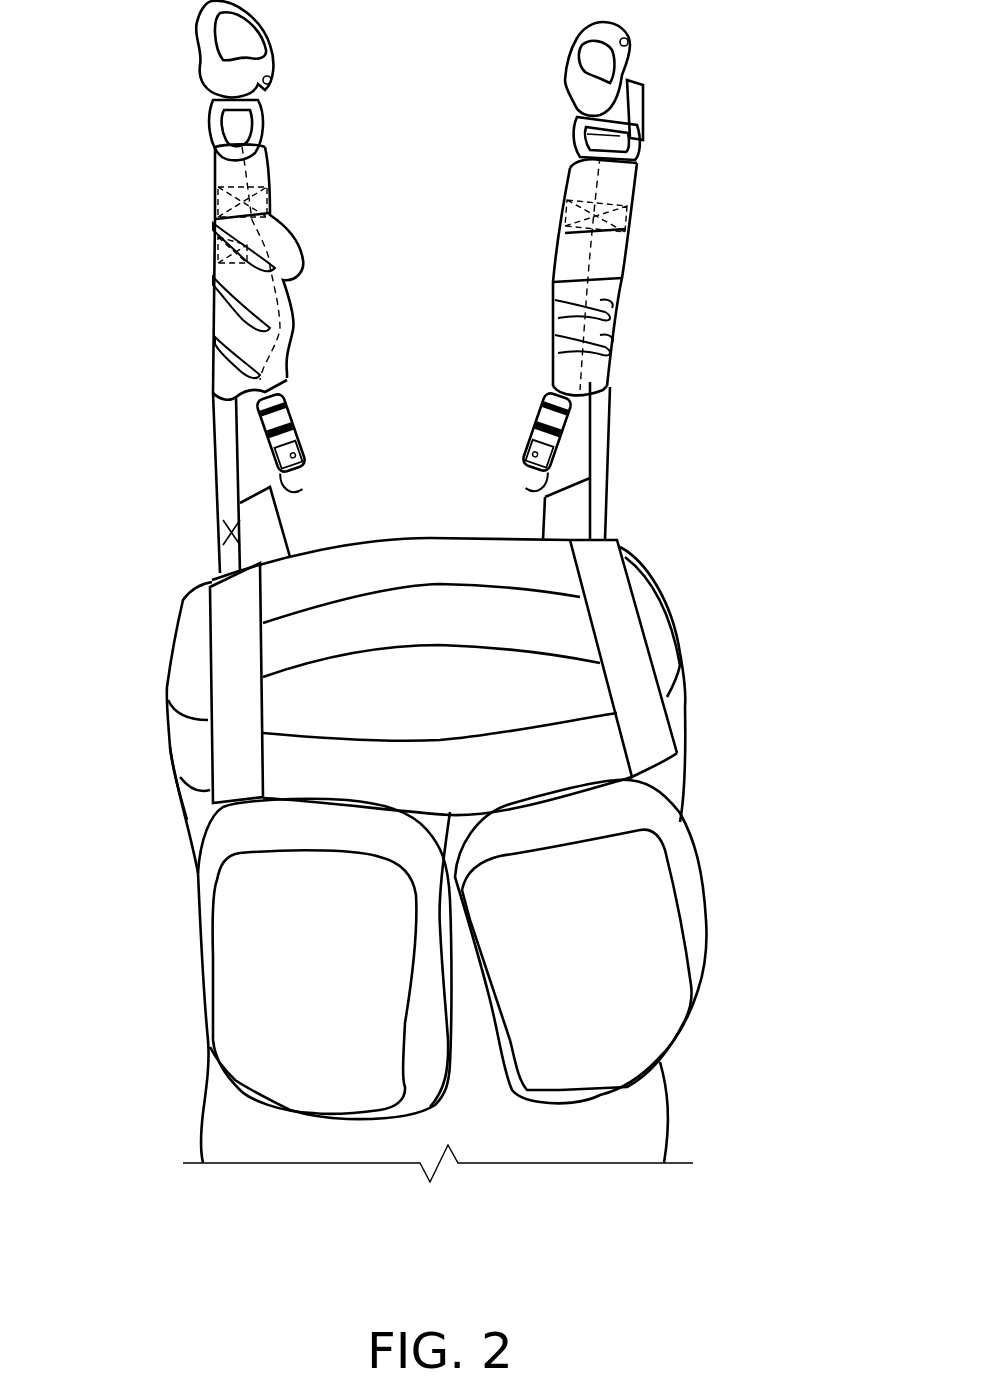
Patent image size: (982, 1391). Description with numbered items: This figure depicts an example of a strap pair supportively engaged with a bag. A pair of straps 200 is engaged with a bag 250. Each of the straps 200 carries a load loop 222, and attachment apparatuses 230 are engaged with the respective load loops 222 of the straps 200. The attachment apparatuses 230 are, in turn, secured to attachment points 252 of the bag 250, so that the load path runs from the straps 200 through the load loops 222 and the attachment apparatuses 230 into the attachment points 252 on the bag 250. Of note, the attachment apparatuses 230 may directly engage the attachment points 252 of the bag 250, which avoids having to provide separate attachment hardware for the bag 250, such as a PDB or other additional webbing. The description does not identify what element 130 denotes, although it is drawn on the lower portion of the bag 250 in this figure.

The straps 200 is at (665, 150).
The load loops 222 is at (213, 353).
The attachment apparatuses 230 is at (220, 462).
The attachment points 252 is at (238, 517).
The bag 250 is at (190, 698).
The leg pad 130 is at (313, 917).